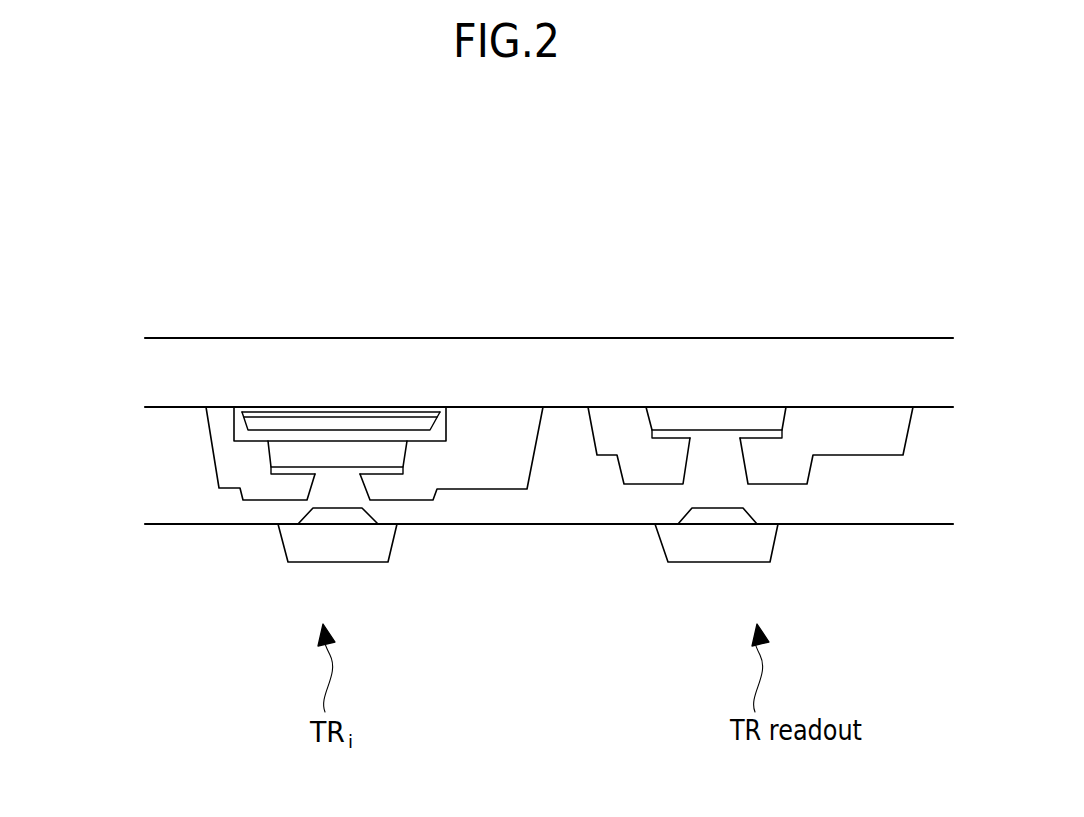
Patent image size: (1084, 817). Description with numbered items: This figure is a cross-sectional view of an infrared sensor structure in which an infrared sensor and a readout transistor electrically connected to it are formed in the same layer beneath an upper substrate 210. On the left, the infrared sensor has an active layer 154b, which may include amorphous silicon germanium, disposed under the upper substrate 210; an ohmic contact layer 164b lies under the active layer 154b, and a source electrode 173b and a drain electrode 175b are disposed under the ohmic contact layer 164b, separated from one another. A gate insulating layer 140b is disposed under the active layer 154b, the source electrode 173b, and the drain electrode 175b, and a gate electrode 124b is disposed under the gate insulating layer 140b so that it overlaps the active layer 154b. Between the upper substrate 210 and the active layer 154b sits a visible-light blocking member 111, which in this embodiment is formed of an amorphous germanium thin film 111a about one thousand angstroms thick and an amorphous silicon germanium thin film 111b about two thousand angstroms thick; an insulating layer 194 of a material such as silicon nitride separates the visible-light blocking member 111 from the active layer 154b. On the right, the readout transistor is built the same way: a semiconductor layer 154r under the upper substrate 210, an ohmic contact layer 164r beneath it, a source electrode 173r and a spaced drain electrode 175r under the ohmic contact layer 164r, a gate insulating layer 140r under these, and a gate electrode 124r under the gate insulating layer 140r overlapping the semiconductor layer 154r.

The upper substrate 210 is at (168, 365).
The visible-light blocking member 111 is at (318, 325).
The amorphous germanium thin film 111a is at (260, 412).
The amorphous silicon germanium thin film 111b is at (302, 422).
The active layer 154b is at (360, 452).
The ohmic contact layer 164b is at (288, 470).
The source electrode 173b is at (228, 460).
The drain electrode 175b is at (487, 465).
The gate electrode 124b is at (385, 545).
The gate insulating layer 140b is at (162, 505).
The insulating layer 194 is at (417, 437).
The semiconductor layer 154r is at (720, 418).
The ohmic contact layer 164r is at (767, 433).
The source electrode 173r is at (620, 425).
The drain electrode 175r is at (872, 418).
The gate electrode 124r is at (682, 547).
The gate insulating layer 140r is at (893, 503).